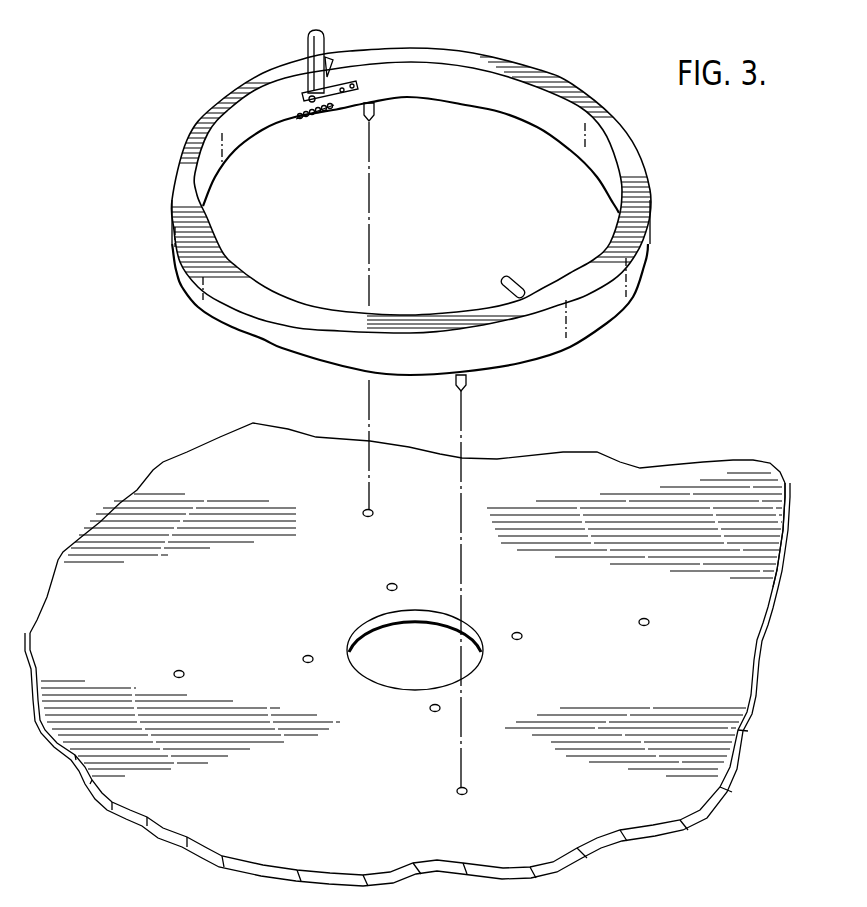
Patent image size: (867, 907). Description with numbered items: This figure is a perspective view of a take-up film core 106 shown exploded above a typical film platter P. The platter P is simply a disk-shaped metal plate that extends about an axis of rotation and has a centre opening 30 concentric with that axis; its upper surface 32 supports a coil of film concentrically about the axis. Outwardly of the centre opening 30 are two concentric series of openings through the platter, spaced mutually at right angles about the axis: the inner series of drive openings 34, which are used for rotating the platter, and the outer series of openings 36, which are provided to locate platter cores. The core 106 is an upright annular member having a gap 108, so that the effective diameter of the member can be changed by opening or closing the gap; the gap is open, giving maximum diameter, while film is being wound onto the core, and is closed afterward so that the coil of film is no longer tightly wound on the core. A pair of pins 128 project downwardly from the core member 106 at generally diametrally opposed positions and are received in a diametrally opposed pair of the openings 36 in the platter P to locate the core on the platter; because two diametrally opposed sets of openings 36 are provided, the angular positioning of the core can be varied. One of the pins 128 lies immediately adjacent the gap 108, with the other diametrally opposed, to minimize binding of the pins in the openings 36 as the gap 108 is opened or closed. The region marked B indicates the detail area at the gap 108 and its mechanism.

The film core 106 is at (641, 136).
The gap 108 is at (340, 52).
The pins 128 is at (372, 120).
The detail region B is at (323, 127).
The upper surface 32 is at (733, 474).
The film platter P is at (760, 520).
The centre opening 30 is at (418, 630).
The drive openings 34 is at (387, 588).
The openings 36 is at (364, 514).